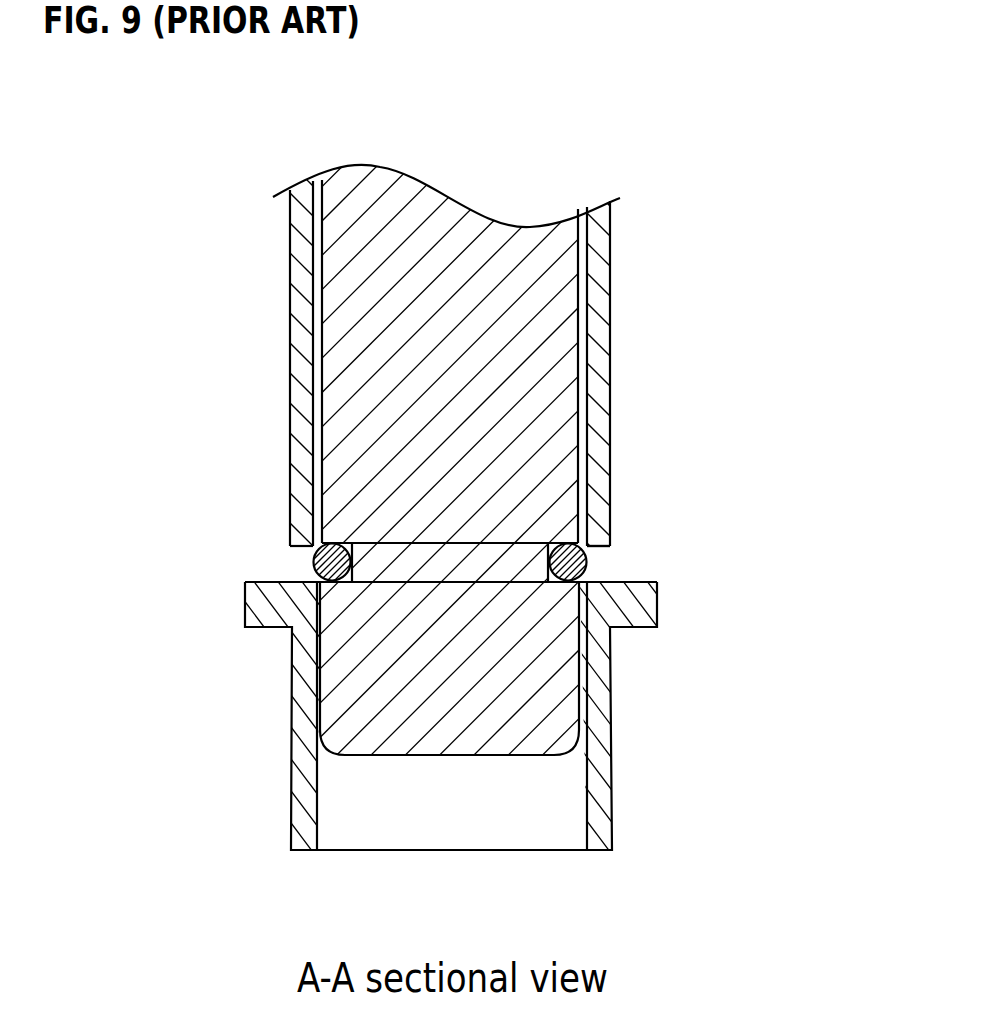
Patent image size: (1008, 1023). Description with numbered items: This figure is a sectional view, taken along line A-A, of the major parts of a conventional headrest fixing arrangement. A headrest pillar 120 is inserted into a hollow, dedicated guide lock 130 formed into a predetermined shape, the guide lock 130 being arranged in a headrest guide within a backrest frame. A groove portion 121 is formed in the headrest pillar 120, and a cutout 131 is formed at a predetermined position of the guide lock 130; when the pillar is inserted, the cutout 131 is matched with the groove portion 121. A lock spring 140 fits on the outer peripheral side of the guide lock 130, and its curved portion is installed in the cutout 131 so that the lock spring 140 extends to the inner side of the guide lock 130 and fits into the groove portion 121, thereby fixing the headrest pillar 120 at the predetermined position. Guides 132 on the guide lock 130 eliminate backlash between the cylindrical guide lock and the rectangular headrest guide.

The headrest pillar 120 is at (438, 220).
The groove portion 121 is at (555, 548).
The guide lock 130 is at (613, 303).
The cutout 131 is at (610, 563).
The guides 132 is at (647, 608).
The lock spring 140 is at (330, 565).